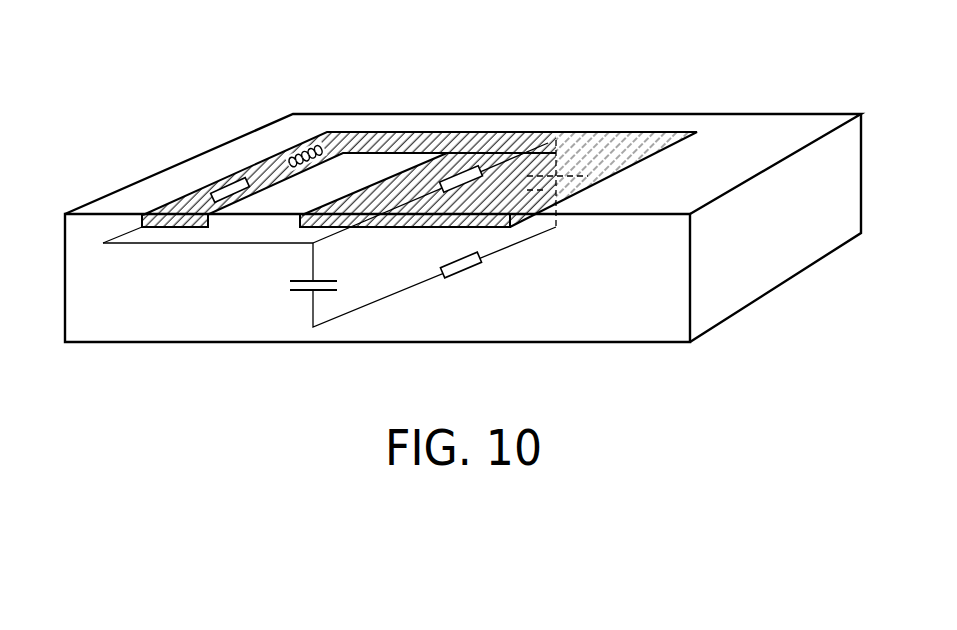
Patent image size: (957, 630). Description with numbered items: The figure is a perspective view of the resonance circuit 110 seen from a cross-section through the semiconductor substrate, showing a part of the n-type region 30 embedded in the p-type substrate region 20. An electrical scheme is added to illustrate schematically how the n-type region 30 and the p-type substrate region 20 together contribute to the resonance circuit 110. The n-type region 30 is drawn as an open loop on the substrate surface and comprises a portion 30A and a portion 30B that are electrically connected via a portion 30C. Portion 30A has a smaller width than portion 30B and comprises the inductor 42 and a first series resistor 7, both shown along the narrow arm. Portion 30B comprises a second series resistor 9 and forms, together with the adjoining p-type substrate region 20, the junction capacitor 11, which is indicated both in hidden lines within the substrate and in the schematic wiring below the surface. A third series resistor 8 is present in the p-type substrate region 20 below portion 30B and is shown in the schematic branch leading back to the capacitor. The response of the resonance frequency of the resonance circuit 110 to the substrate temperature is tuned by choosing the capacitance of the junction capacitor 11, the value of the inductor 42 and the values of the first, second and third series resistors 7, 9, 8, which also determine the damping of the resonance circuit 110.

The resonance circuit 110 is at (535, 83).
The p-type substrate region 20 is at (110, 345).
The n-type region 30 is at (172, 228).
The portion of n-type region 30A is at (272, 165).
The portion of n-type region 30B is at (592, 160).
The portion of n-type region 30C is at (404, 147).
The first series resistor 7 is at (222, 180).
The third series resistor 8 is at (470, 272).
The second series resistor 9 is at (465, 170).
The junction capacitor 11 is at (297, 291).
The inductor 42 is at (311, 167).